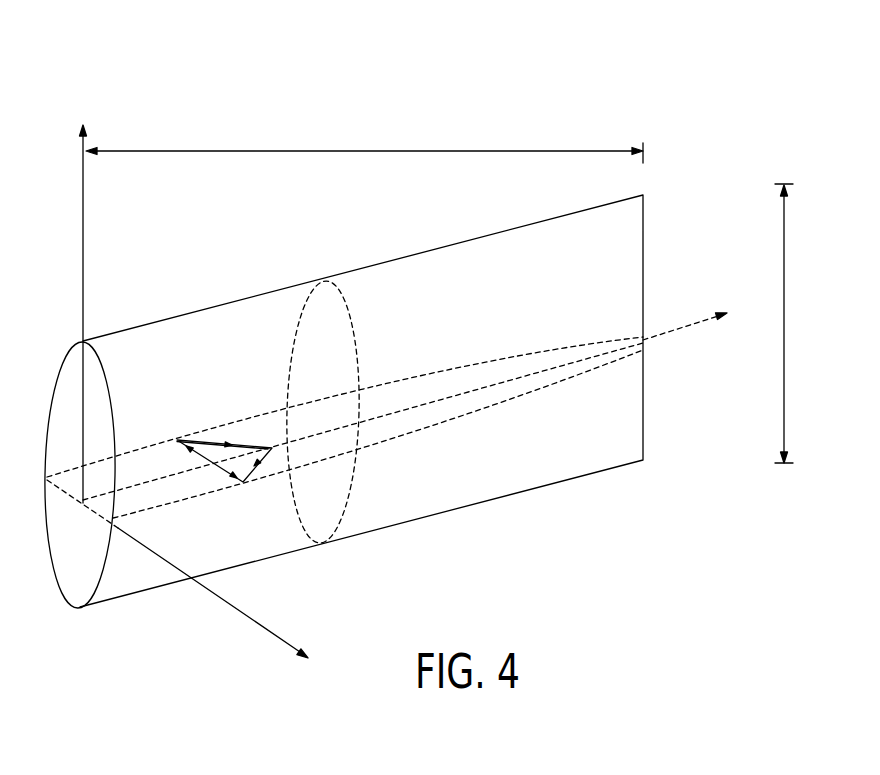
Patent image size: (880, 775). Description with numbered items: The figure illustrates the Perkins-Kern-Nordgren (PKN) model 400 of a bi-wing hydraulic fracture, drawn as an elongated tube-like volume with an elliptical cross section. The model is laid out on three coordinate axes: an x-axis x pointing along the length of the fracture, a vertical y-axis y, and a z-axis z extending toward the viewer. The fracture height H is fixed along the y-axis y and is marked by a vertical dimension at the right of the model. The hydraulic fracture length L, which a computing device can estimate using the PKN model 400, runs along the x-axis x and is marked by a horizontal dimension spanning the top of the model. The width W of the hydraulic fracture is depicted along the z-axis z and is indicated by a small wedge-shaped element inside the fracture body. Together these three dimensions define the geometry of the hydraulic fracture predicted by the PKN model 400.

The PKN model 400 is at (494, 94).
The hydraulic fracture length L is at (381, 151).
The fracture height H is at (783, 250).
The width W is at (208, 462).
The x-axis x is at (687, 325).
The y-axis y is at (83, 228).
The z-axis z is at (278, 635).